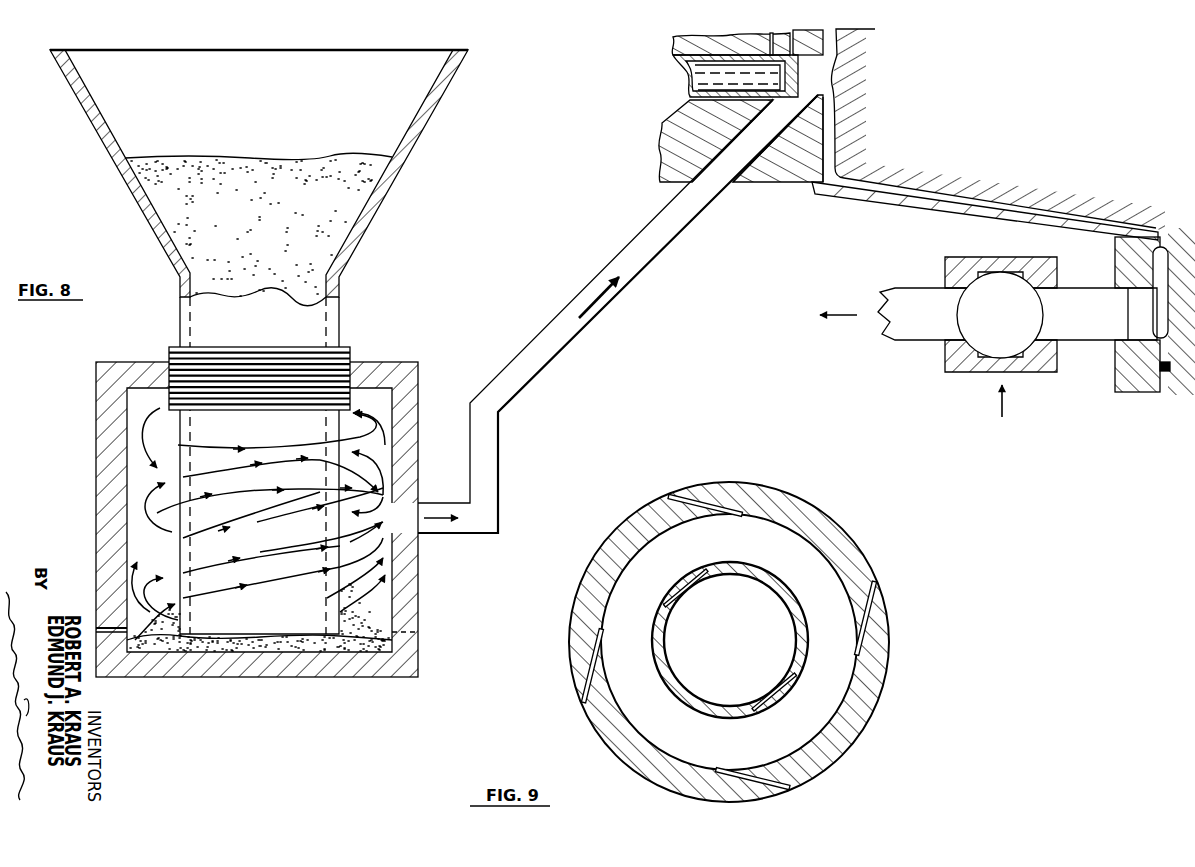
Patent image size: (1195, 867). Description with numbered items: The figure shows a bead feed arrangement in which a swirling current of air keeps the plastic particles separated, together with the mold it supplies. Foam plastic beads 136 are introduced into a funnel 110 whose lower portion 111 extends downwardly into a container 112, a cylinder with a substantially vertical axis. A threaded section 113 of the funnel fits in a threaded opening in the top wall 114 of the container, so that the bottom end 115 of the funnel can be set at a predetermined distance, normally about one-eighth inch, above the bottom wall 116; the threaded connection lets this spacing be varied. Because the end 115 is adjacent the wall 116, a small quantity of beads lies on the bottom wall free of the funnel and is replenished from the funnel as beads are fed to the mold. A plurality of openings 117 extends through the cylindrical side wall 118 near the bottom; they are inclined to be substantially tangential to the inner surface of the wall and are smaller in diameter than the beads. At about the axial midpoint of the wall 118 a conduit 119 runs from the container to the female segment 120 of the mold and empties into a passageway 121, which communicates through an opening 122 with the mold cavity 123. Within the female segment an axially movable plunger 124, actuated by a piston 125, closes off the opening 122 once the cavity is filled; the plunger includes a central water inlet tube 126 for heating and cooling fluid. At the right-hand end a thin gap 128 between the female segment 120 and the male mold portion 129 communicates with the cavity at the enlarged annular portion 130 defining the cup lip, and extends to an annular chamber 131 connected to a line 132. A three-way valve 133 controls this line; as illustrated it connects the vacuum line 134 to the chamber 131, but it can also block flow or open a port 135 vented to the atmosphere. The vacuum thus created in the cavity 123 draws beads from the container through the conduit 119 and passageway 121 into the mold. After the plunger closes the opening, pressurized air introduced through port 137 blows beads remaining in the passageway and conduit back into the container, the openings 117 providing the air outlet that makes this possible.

In FIG. 8, the funnel 110 is at (381, 226).
In FIG. 8, the lower portion 111 is at (334, 445).
In FIG. 9, the lower portion 111 is at (790, 592).
In FIG. 8, the container 112 is at (420, 453).
In FIG. 9, the container 112 is at (830, 503).
In FIG. 8, the threaded section 113 is at (348, 362).
In FIG. 8, the top wall 114 is at (354, 364).
In FIG. 8, the bottom end 115 is at (243, 640).
In FIG. 8, the bottom wall 116 is at (370, 653).
In FIG. 8, the openings 117 is at (107, 633).
In FIG. 9, the openings 117 is at (707, 495).
In FIG. 8, the cylindrical side wall 118 is at (400, 597).
In FIG. 9, the cylindrical side wall 118 is at (847, 713).
In FIG. 8, the conduit 119 is at (540, 366).
In FIG. 8, the female segment 120 is at (672, 148).
In FIG. 8, the passageway 121 is at (775, 128).
In FIG. 8, the opening 122 is at (840, 62).
In FIG. 8, the mold cavity 123 is at (888, 186).
In FIG. 8, the plunger 124 is at (688, 55).
In FIG. 8, the piston 125 is at (690, 78).
In FIG. 8, the central water inlet tube 126 is at (700, 93).
In FIG. 8, the gap 128 is at (1133, 233).
In FIG. 8, the male mold portion 129 is at (1173, 373).
In FIG. 8, the enlarged annular portion 130 is at (1163, 230).
In FIG. 8, the annular chamber 131 is at (1160, 308).
In FIG. 8, the line 132 is at (1095, 328).
In FIG. 8, the three-way valve 133 is at (945, 354).
In FIG. 8, the vacuum line 134 is at (923, 308).
In FIG. 8, the port 135 is at (1003, 360).
In FIG. 8, the foam plastic beads 136 is at (385, 158).
In FIG. 8, the port 137 is at (770, 33).